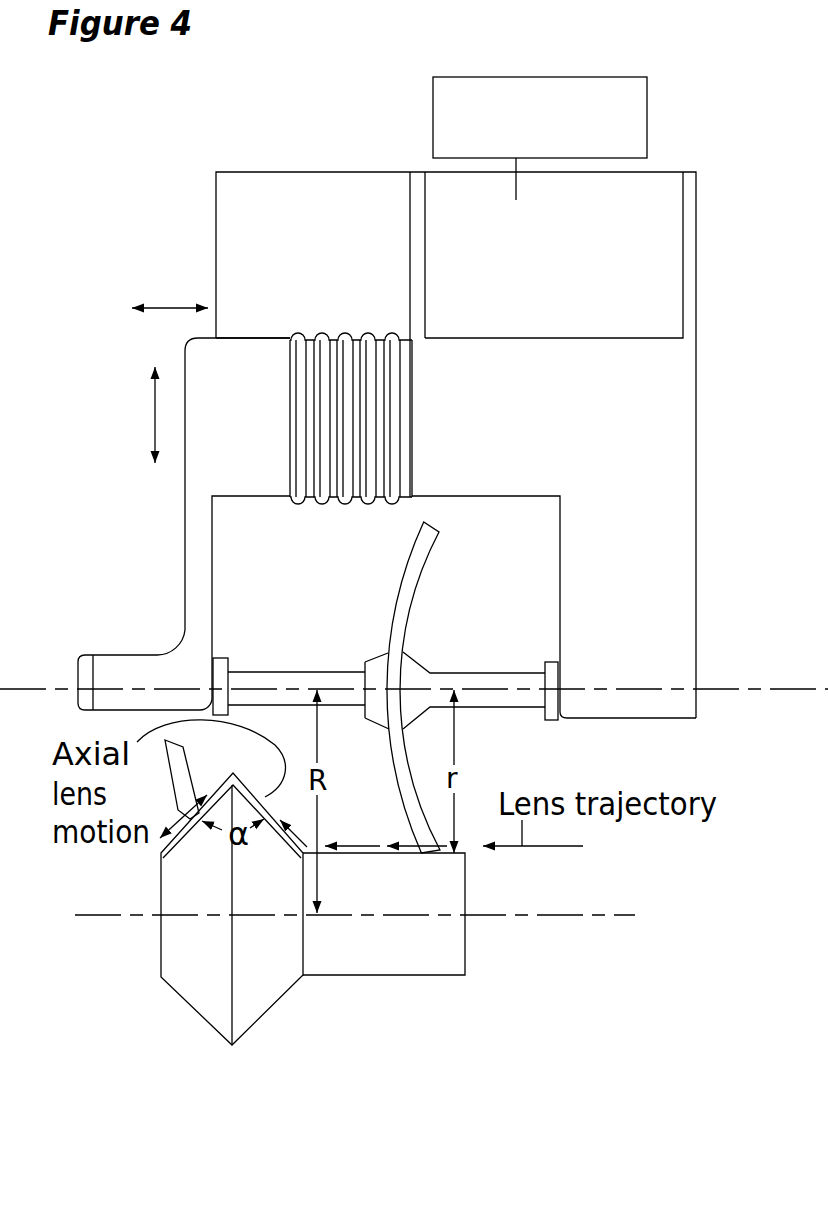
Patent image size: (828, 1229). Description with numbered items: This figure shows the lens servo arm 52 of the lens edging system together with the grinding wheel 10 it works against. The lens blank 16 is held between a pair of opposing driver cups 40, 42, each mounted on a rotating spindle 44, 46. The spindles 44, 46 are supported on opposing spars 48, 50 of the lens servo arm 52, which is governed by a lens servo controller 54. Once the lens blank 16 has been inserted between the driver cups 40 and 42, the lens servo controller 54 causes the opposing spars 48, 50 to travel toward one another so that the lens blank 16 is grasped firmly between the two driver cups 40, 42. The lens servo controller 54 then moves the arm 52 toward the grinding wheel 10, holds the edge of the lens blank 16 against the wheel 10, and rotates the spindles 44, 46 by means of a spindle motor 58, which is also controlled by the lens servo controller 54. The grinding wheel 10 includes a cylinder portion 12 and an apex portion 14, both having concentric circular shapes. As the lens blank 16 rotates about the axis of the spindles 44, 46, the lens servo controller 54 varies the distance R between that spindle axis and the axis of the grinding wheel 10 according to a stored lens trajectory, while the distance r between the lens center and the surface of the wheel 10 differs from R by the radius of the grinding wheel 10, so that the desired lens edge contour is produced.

The grinding wheel 10 is at (478, 977).
The cylinder portion 12 is at (370, 975).
The apex portion 14 is at (193, 1013).
The lens blank 16 is at (418, 537).
The driver cup 40 is at (415, 658).
The driver cup 42 is at (370, 660).
The spindle 44 is at (503, 670).
The spindle 46 is at (297, 670).
The spar 48 is at (534, 437).
The spar 50 is at (265, 434).
The lens servo arm 52 is at (343, 338).
The lens servo controller 54 is at (433, 122).
The spindle motor 58 is at (637, 677).